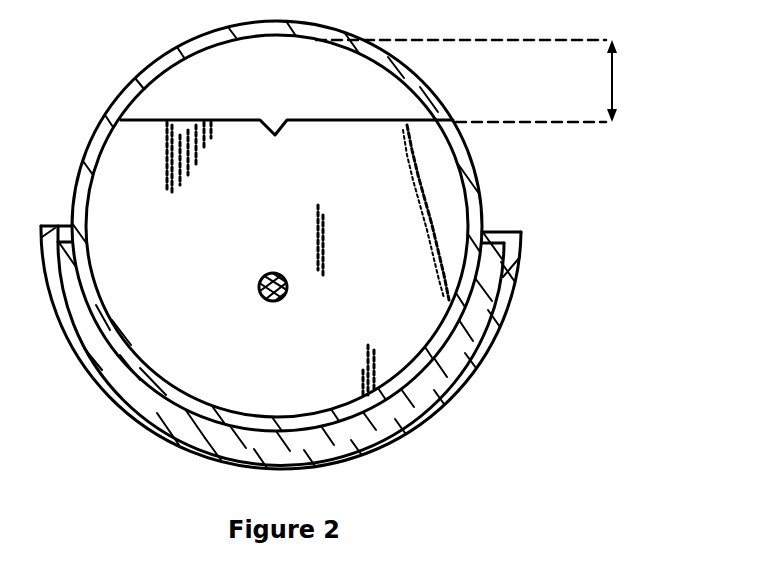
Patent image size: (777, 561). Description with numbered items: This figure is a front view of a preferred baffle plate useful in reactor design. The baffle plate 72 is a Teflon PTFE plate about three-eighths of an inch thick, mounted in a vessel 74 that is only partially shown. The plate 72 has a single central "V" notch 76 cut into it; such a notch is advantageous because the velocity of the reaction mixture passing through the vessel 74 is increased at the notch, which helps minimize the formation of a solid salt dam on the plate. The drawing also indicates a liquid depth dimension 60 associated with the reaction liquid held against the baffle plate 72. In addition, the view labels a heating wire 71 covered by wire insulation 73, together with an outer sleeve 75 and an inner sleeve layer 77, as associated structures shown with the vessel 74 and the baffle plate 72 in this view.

The liquid depth dimension 60 is at (620, 80).
The heating wire 71 is at (288, 292).
The baffle plate 72 is at (443, 180).
The wire insulation 73 is at (257, 292).
The vessel 74 is at (128, 92).
The outer sleeve 75 is at (473, 360).
The central "V" notch 76 is at (270, 118).
The inner sleeve layer 77 is at (92, 370).